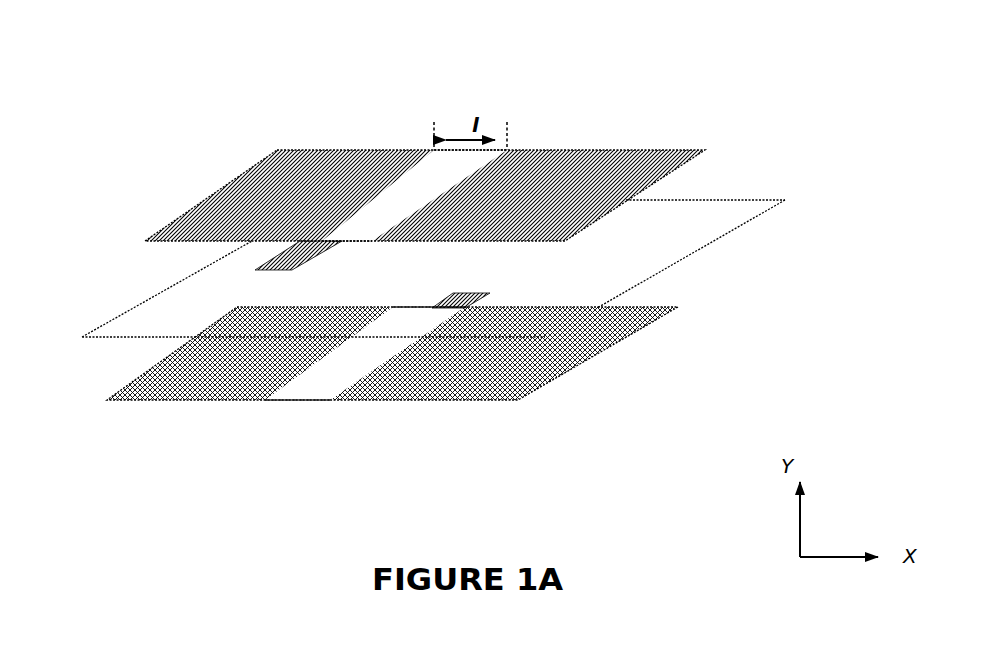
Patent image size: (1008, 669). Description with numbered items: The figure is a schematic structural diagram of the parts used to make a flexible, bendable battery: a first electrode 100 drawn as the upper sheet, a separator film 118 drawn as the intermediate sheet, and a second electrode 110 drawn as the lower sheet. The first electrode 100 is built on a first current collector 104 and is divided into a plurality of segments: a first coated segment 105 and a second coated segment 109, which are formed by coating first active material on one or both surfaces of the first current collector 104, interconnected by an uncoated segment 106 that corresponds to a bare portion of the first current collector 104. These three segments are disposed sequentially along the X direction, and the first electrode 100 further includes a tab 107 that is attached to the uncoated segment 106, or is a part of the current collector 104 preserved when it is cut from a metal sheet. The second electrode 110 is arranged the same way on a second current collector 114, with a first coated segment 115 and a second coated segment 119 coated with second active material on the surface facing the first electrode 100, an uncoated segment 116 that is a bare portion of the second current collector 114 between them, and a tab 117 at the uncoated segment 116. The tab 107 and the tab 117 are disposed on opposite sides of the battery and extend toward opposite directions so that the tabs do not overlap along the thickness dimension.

The first electrode 100 is at (271, 110).
The first current collector 104 is at (703, 150).
The first coated segment 105 is at (332, 160).
The uncoated segment 106 is at (417, 183).
The tab 107 is at (283, 262).
The second coated segment 109 is at (647, 158).
The second electrode 110 is at (133, 410).
The second current collector 114 is at (588, 357).
The first coated segment 115 is at (227, 382).
The uncoated segment 116 is at (312, 387).
The tab 117 is at (462, 300).
The separator film 118 is at (697, 223).
The second coated segment 119 is at (472, 380).